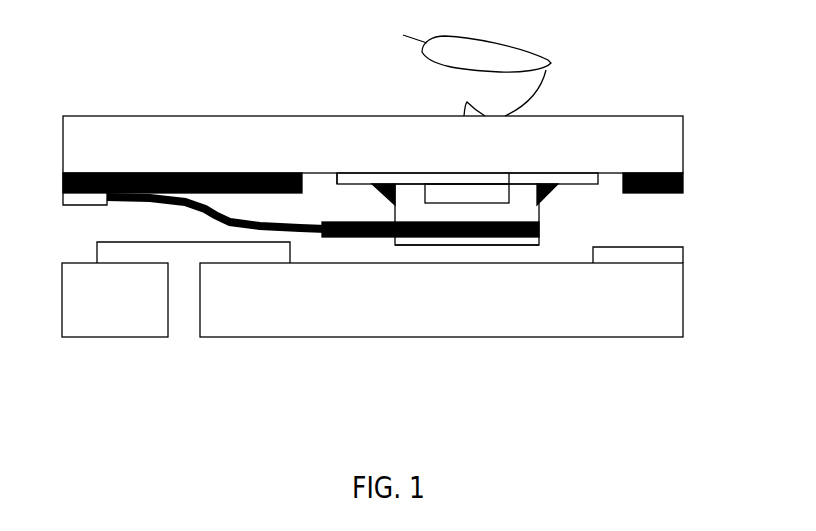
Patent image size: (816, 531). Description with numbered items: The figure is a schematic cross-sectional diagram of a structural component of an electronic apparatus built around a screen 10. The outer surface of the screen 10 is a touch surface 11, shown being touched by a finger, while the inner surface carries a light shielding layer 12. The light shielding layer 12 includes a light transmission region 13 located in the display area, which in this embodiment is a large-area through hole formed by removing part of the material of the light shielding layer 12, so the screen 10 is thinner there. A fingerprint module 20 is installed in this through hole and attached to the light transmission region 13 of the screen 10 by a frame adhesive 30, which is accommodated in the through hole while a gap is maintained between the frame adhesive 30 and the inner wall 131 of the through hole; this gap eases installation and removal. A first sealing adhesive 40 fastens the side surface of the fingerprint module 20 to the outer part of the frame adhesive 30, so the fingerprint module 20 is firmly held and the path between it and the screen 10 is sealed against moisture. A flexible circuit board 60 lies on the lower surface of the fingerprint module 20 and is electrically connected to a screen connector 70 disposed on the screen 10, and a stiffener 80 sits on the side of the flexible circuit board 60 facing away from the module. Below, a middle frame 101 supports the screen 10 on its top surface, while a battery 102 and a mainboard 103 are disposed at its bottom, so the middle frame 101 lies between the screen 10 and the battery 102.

The screen 10 is at (667, 143).
The touch surface 11 is at (563, 110).
The light shielding layer 12 is at (687, 182).
The light transmission region 13 is at (312, 186).
The inner wall of the through hole 131 is at (323, 174).
The fingerprint module 20 is at (528, 213).
The frame adhesive 30 is at (587, 182).
The first sealing adhesive 40 is at (555, 198).
The flexible circuit board 60 is at (383, 237).
The screen connector 70 is at (80, 200).
The stiffener 80 is at (505, 242).
The middle frame 101 is at (648, 258).
The battery 102 is at (465, 312).
The mainboard 103 is at (107, 319).